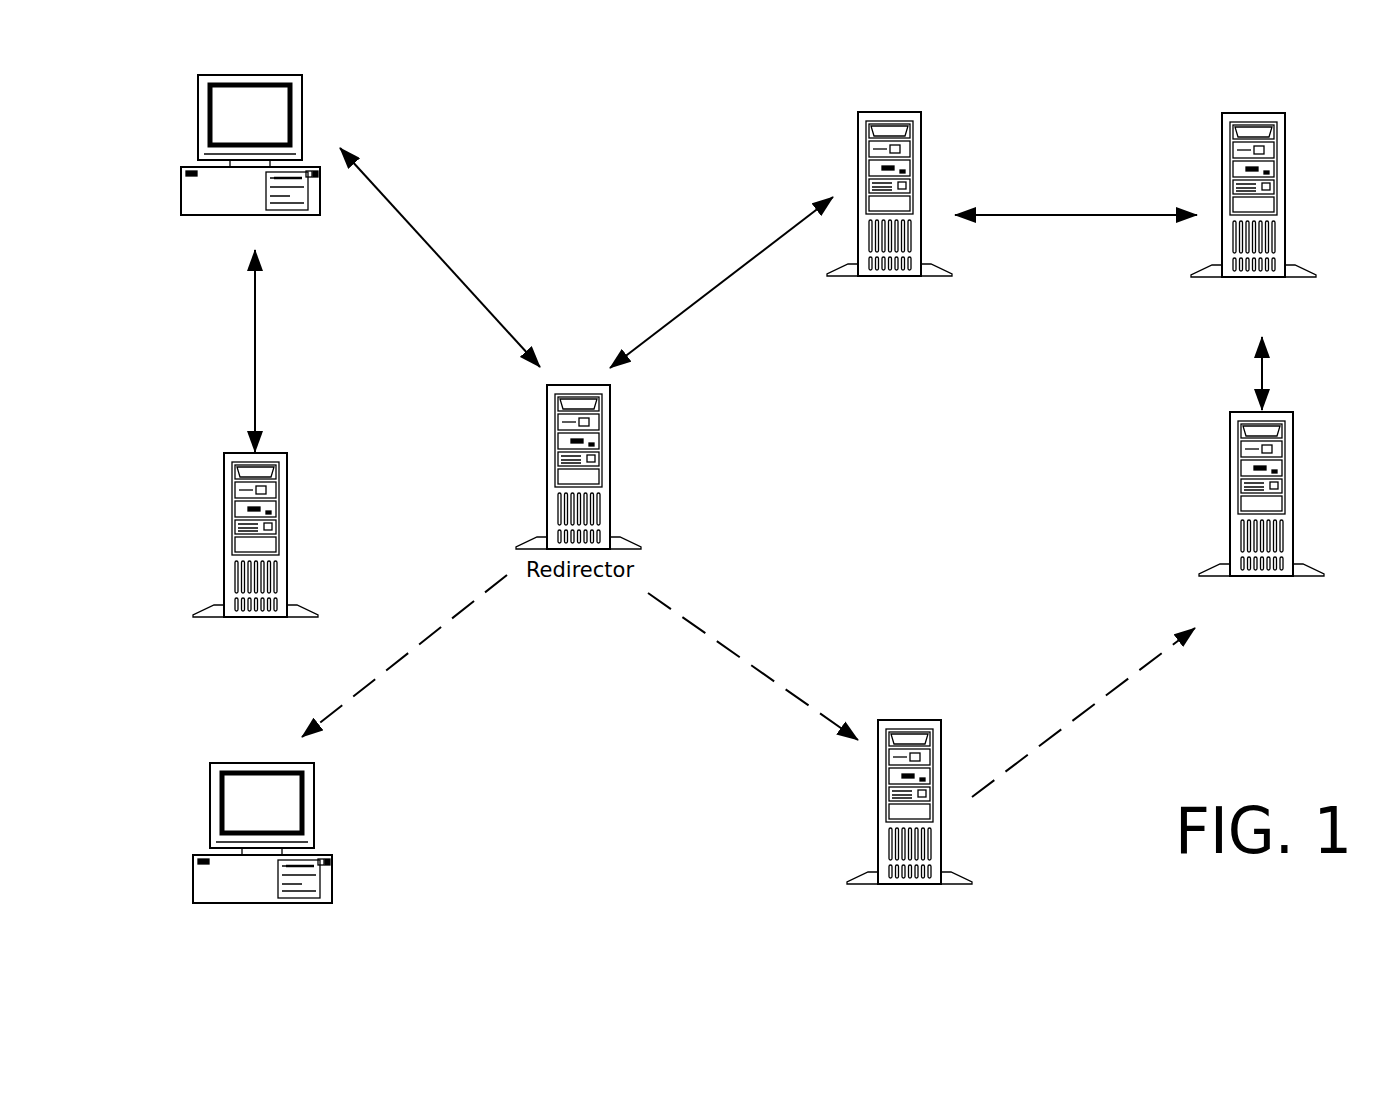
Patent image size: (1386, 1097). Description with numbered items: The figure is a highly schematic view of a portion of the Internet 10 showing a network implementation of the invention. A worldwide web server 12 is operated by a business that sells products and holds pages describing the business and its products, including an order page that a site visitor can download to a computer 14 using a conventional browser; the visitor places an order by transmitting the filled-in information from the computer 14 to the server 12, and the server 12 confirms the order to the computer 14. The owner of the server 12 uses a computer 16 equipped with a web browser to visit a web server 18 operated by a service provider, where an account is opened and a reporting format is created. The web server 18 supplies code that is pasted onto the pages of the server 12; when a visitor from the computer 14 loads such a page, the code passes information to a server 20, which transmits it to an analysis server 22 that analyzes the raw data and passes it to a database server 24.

The portion of the Internet 10 is at (561, 168).
The worldwide web server 12 is at (287, 533).
The computer 14 is at (181, 175).
The computer 16 is at (332, 865).
The web server 18 is at (905, 720).
The server 20 is at (922, 160).
The analysis server 22 is at (1222, 195).
The database server 24 is at (1230, 497).